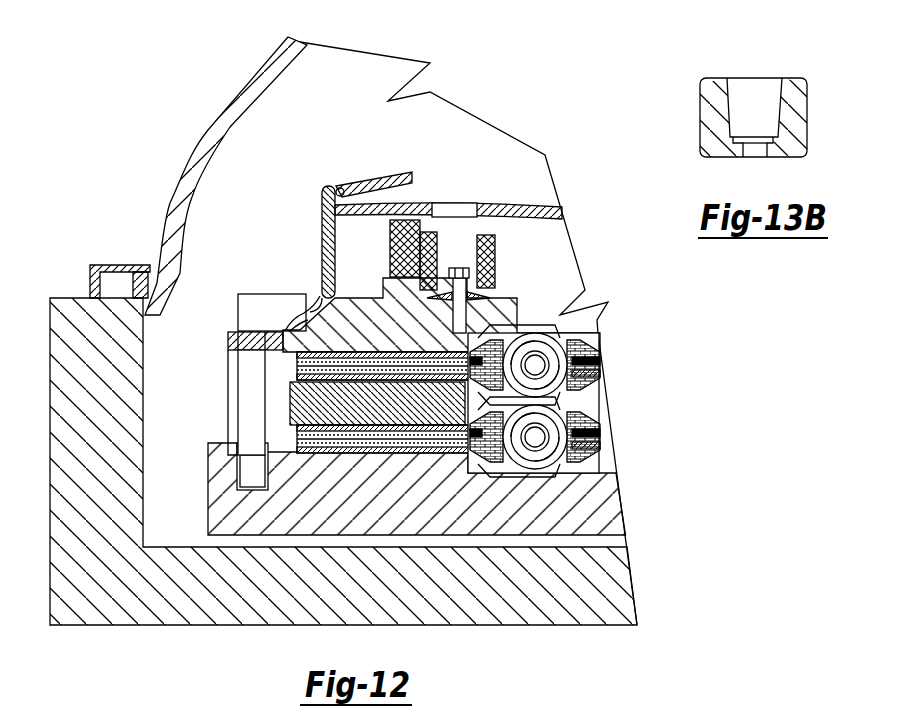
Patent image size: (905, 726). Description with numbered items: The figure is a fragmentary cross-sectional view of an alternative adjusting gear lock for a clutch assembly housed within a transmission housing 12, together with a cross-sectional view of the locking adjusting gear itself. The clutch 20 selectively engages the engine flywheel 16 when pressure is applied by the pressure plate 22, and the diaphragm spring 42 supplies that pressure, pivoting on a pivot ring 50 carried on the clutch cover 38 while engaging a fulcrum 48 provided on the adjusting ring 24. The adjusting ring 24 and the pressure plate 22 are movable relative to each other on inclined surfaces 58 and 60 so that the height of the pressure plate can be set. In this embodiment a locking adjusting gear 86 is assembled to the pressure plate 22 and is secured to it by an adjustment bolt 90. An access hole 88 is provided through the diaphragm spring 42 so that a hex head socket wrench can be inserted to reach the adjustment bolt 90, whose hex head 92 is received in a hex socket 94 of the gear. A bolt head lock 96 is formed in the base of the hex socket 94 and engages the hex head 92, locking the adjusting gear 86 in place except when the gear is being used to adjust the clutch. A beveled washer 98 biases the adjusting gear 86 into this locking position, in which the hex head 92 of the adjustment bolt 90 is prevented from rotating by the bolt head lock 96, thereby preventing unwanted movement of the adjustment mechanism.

In FIG. 12, the transmission housing 12 is at (205, 137).
In FIG. 12, the engine flywheel 16 is at (208, 485).
In FIG. 12, the clutch 20 is at (600, 378).
In FIG. 12, the pressure plate 22 is at (320, 298).
In FIG. 12, the adjusting ring 24 is at (390, 248).
In FIG. 12, the clutch cover 38 is at (322, 212).
In FIG. 12, the diaphragm spring 42 is at (500, 208).
In FIG. 12, the fulcrum 48 is at (410, 215).
In FIG. 12, the pivot ring 50 is at (338, 188).
In FIG. 12, the inclined surface 58 is at (386, 278).
In FIG. 12, the inclined surface 60 is at (435, 242).
In FIG. 12, the locking adjusting gear 86 is at (497, 252).
In FIG. 13B, the locking adjusting gear 86 is at (700, 105).
In FIG. 12, the access hole 88 is at (466, 208).
In FIG. 12, the adjustment bolt 90 is at (470, 318).
In FIG. 12, the hex head 92 is at (457, 266).
In FIG. 13B, the hex socket 94 is at (737, 100).
In FIG. 13B, the bolt head lock 96 is at (760, 135).
In FIG. 12, the beveled washer 98 is at (488, 297).